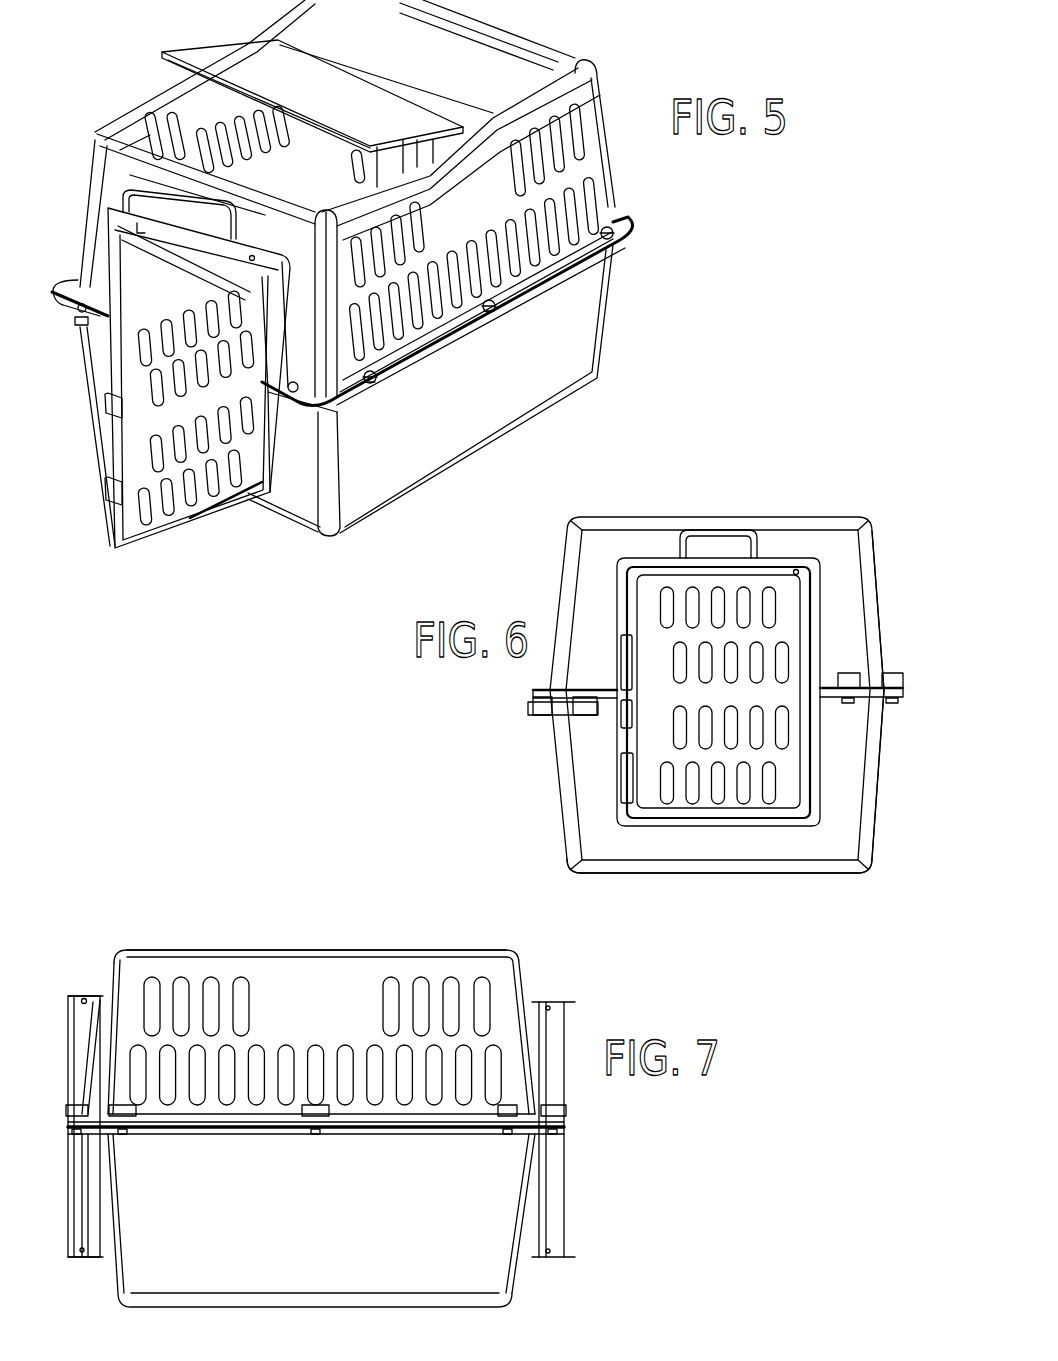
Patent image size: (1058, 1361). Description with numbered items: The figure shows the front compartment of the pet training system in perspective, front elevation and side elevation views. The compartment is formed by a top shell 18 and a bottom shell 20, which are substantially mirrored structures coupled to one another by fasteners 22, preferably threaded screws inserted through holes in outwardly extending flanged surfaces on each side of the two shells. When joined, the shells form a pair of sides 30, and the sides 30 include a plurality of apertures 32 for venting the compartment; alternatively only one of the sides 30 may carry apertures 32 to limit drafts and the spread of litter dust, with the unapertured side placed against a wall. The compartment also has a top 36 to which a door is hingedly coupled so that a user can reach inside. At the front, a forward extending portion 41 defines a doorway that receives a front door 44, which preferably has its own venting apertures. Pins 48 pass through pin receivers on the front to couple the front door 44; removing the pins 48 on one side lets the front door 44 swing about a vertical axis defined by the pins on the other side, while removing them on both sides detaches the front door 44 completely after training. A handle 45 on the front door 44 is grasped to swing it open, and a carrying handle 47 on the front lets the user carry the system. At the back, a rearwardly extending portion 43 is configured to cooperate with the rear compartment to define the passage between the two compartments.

In FIG. 5, the top shell 18 is at (588, 68).
In FIG. 6, the top shell 18 is at (842, 570).
In FIG. 7, the top shell 18 is at (293, 986).
In FIG. 5, the bottom shell 20 is at (457, 430).
In FIG. 6, the bottom shell 20 is at (830, 842).
In FIG. 7, the bottom shell 20 is at (464, 1282).
In FIG. 5, the fasteners 22 is at (617, 233).
In FIG. 6, the fasteners 22 is at (908, 673).
In FIG. 7, the fasteners 22 is at (567, 1112).
In FIG. 5, the sides 30 is at (547, 247).
In FIG. 6, the sides 30 is at (877, 625).
In FIG. 7, the sides 30 is at (507, 1182).
In FIG. 5, the apertures 32 is at (573, 133).
In FIG. 7, the apertures 32 is at (387, 987).
In FIG. 7, the top 36 is at (462, 952).
In FIG. 7, the forward extending portion 41 is at (84, 1023).
In FIG. 7, the rearwardly extending portion 43 is at (555, 1029).
In FIG. 5, the front door 44 is at (137, 523).
In FIG. 6, the front door 44 is at (790, 773).
In FIG. 5, the handle 45 is at (113, 463).
In FIG. 6, the handle 45 is at (620, 717).
In FIG. 5, the carrying handle 47 is at (190, 203).
In FIG. 6, the carrying handle 47 is at (715, 543).
In FIG. 5, the pins 48 is at (250, 257).
In FIG. 6, the pins 48 is at (790, 562).
In FIG. 7, the pins 48 is at (84, 996).